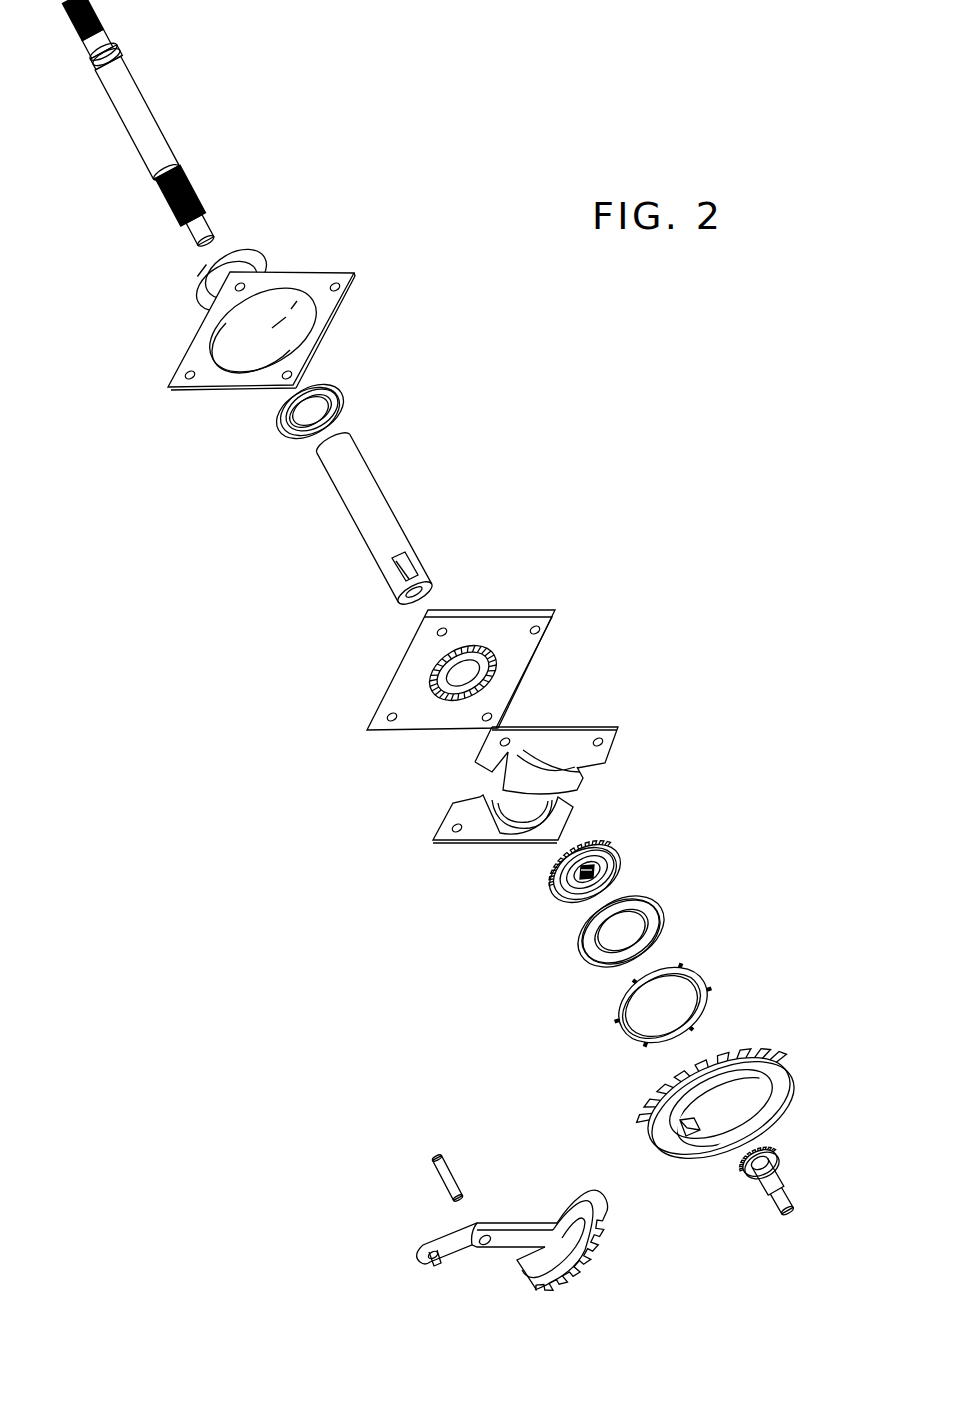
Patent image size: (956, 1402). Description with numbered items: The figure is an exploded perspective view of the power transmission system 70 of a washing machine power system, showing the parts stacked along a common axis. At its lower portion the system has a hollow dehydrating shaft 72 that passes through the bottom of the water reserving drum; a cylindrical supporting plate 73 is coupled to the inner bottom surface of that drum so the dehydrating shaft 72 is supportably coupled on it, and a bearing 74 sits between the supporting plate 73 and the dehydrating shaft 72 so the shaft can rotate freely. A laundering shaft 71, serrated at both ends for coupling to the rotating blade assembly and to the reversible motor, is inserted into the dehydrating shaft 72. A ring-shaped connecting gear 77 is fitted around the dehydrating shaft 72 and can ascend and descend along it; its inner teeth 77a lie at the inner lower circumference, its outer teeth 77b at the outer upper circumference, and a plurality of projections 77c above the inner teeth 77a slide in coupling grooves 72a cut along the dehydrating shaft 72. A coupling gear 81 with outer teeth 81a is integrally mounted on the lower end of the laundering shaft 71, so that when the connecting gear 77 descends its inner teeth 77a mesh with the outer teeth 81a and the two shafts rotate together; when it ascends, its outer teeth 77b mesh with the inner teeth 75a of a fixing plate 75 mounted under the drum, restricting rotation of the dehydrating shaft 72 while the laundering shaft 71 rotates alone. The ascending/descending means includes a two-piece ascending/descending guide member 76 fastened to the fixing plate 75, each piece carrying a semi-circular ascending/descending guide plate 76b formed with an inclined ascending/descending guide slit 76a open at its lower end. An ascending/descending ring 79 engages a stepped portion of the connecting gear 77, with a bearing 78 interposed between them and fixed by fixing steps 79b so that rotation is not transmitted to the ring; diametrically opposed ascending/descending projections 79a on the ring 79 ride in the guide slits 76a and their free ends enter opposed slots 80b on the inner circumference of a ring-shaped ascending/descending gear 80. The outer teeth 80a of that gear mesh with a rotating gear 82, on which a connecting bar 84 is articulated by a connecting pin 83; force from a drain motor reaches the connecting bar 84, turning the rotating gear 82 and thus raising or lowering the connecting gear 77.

The power transmission system 70 is at (242, 643).
The laundering shaft 71 is at (146, 113).
The dehydrating shaft 72 is at (372, 494).
The coupling grooves 72a is at (415, 566).
The supporting plate 73 is at (301, 278).
The bearing 74 is at (330, 389).
The fixing plate 75 is at (511, 622).
The inner teeth 75a is at (498, 660).
The ascending/descending guide member 76 is at (607, 721).
The ascending/descending guide slit 76a is at (551, 753).
The ascending/descending guide plate 76b is at (606, 764).
The connecting gear 77 is at (614, 830).
The inner teeth 77a is at (607, 873).
The outer teeth 77b is at (546, 868).
The projections 77c is at (568, 882).
The bearing 78 is at (655, 903).
The ascending/descending ring 79 is at (686, 955).
The ascending/descending projections 79a is at (694, 965).
The fixing steps 79b is at (628, 1030).
The ascending/descending gear 80 is at (672, 1167).
The outer teeth 80a is at (770, 1050).
The slots 80b is at (692, 1126).
The coupling gear 81 is at (781, 1162).
The outer teeth 81a is at (745, 1173).
The rotating gear 82 is at (553, 1291).
The connecting pin 83 is at (452, 1188).
The connecting bar 84 is at (500, 1245).